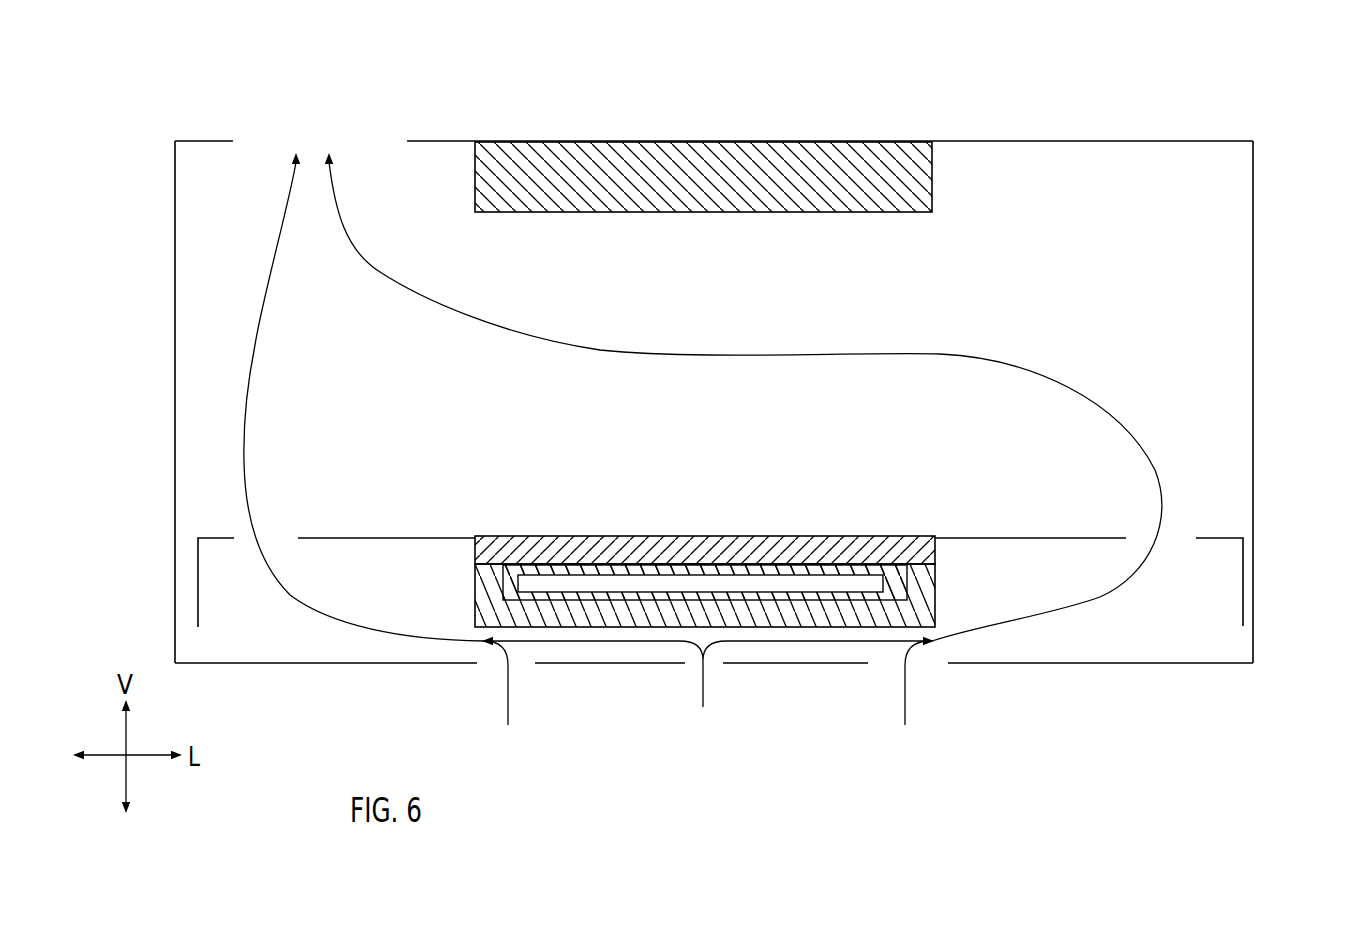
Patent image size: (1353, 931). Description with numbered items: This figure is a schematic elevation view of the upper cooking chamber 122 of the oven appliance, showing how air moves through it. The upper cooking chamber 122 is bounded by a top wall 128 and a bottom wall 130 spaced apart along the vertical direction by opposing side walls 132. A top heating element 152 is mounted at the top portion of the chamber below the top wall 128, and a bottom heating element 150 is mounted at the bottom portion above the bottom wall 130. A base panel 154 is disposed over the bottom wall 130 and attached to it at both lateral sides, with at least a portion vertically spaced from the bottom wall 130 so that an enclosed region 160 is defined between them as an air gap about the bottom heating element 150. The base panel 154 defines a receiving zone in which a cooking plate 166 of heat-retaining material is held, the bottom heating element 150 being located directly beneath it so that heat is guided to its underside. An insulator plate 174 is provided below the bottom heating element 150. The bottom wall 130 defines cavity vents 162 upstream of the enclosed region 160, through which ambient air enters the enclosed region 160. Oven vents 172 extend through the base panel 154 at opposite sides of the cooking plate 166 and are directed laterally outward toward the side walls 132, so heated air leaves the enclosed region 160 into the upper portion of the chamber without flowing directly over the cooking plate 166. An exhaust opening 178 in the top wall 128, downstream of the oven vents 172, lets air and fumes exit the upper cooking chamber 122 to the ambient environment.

The upper cooking chamber 122 is at (727, 308).
The top wall 128 is at (1078, 141).
The bottom wall 130 is at (1198, 665).
The opposing side walls 132 is at (175, 423).
The bottom heating element 150 is at (679, 537).
The top heating element 152 is at (795, 178).
The base panel 154 is at (983, 538).
The enclosed region 160 is at (285, 627).
The cavity vents 162 is at (528, 678).
The cooking plate 166 is at (887, 555).
The oven vents 172 is at (244, 549).
The insulator plate 174 is at (475, 598).
The exhaust opening 178 is at (380, 135).